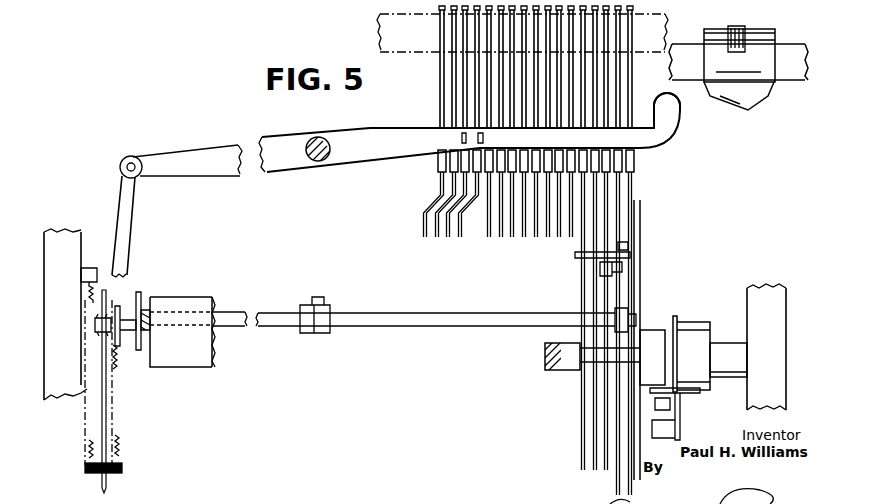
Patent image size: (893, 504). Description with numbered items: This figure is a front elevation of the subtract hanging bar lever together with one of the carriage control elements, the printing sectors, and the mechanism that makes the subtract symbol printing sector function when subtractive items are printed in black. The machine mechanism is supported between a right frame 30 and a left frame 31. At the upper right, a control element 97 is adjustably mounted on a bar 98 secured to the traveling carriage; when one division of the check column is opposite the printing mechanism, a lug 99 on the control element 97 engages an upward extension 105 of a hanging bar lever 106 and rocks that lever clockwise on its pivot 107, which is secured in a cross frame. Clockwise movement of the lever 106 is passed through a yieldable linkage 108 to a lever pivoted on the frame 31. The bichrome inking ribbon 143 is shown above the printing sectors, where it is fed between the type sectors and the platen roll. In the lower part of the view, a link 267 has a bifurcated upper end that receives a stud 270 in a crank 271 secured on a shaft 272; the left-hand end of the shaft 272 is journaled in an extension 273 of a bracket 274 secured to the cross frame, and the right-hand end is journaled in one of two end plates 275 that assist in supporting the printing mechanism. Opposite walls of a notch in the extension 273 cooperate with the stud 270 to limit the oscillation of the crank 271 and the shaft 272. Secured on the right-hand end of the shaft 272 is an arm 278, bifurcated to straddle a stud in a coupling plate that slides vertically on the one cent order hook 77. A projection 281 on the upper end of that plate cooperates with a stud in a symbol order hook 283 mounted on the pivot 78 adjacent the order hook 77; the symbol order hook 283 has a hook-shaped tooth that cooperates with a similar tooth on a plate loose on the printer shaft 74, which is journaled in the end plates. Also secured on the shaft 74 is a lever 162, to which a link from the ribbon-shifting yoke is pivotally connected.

The bichrome inking ribbon 143 is at (401, 45).
The hanging bar lever 106 is at (399, 128).
The upward extension 105 is at (677, 109).
The pivot 107 is at (320, 161).
The yieldable linkage 108 is at (133, 232).
The left frame 31 is at (71, 234).
The link 267 is at (106, 428).
The extension 273 is at (136, 292).
The crank 271 is at (151, 310).
The bracket 274 is at (194, 308).
The stud 270 is at (140, 348).
The shaft 272 is at (396, 316).
The end plate 275 is at (640, 285).
The order hook 77 is at (628, 246).
The projection 281 is at (630, 256).
The symbol order hook 283 is at (622, 270).
The arm 278 is at (630, 310).
The pivot 78 is at (567, 367).
The shaft 74 is at (736, 346).
The right frame 30 is at (772, 288).
The lever 162 is at (680, 414).
The bar 98 is at (688, 52).
The control element 97 is at (726, 32).
The lug 99 is at (764, 108).